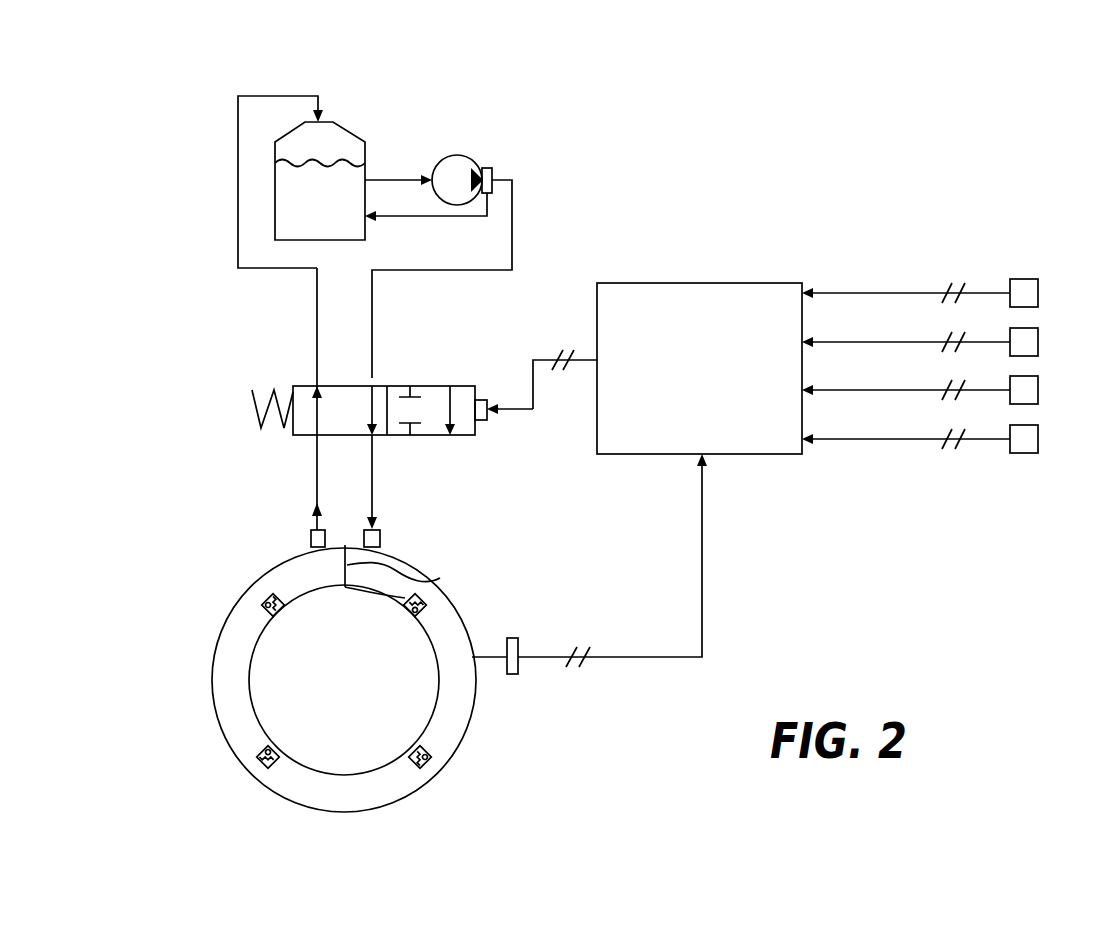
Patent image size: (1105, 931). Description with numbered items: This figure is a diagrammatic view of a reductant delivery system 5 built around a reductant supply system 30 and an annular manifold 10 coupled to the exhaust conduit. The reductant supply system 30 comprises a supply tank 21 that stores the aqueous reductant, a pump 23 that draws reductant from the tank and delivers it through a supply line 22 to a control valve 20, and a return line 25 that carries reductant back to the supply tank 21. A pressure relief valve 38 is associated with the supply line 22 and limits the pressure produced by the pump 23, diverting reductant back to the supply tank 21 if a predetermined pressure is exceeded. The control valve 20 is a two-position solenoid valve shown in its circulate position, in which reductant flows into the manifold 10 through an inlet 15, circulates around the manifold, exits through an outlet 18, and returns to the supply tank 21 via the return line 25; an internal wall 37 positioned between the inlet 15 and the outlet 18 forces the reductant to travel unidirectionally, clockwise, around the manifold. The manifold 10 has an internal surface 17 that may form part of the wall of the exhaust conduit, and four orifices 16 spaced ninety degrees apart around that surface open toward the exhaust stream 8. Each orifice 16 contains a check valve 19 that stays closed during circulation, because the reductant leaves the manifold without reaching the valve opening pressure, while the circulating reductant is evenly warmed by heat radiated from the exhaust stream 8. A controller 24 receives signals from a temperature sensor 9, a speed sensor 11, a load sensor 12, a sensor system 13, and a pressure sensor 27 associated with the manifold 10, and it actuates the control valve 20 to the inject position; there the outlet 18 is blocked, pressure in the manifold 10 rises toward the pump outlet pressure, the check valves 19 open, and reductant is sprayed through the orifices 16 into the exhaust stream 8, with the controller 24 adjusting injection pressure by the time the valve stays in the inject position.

The reductant delivery system 5 is at (80, 57).
The reductant supply system 30 is at (186, 130).
The supply tank 21 is at (340, 131).
The pump 23 is at (480, 163).
The pressure relief valve 38 is at (496, 171).
The supply line 22 is at (512, 227).
The return line 25 is at (317, 328).
The control valve 20 is at (247, 386).
The controller 24 is at (712, 379).
The temperature sensor 9 is at (1038, 293).
The speed sensor 11 is at (1038, 342).
The load sensor 12 is at (1038, 390).
The sensor system 13 is at (1038, 439).
The pressure sensor 27 is at (513, 636).
The outlet 18 is at (312, 540).
The inlet 15 is at (380, 538).
The manifold 10 is at (225, 623).
The exhaust stream 8 is at (350, 687).
The internal wall 37 is at (440, 578).
The check valve 19 is at (340, 587).
The orifice 16 is at (263, 603).
The internal surface 17 is at (264, 754).